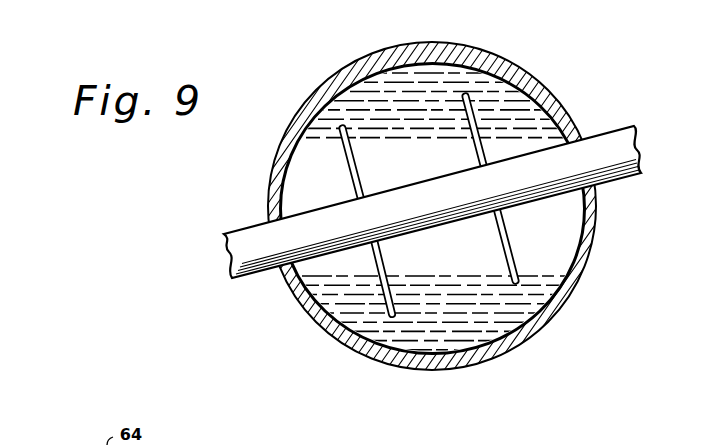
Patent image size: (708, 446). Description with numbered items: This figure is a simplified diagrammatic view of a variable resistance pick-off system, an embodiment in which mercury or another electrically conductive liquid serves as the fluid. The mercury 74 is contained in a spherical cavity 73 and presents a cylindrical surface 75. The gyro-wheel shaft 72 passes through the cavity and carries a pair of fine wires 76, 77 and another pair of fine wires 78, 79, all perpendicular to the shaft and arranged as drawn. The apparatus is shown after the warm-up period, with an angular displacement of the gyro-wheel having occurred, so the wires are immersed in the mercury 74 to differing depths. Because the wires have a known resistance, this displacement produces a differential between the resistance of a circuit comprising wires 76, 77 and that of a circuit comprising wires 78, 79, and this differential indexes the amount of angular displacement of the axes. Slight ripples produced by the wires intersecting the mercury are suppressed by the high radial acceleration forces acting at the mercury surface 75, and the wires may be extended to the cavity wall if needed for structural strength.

The gyro-wheel shaft 72 is at (623, 127).
The spherical cavity 73 is at (296, 160).
The mercury 74 is at (366, 93).
The cylindrical surface 75 is at (521, 136).
The fine wire 76 is at (474, 145).
The fine wire 77 is at (384, 259).
The fine wire 78 is at (508, 237).
The fine wire 79 is at (351, 171).